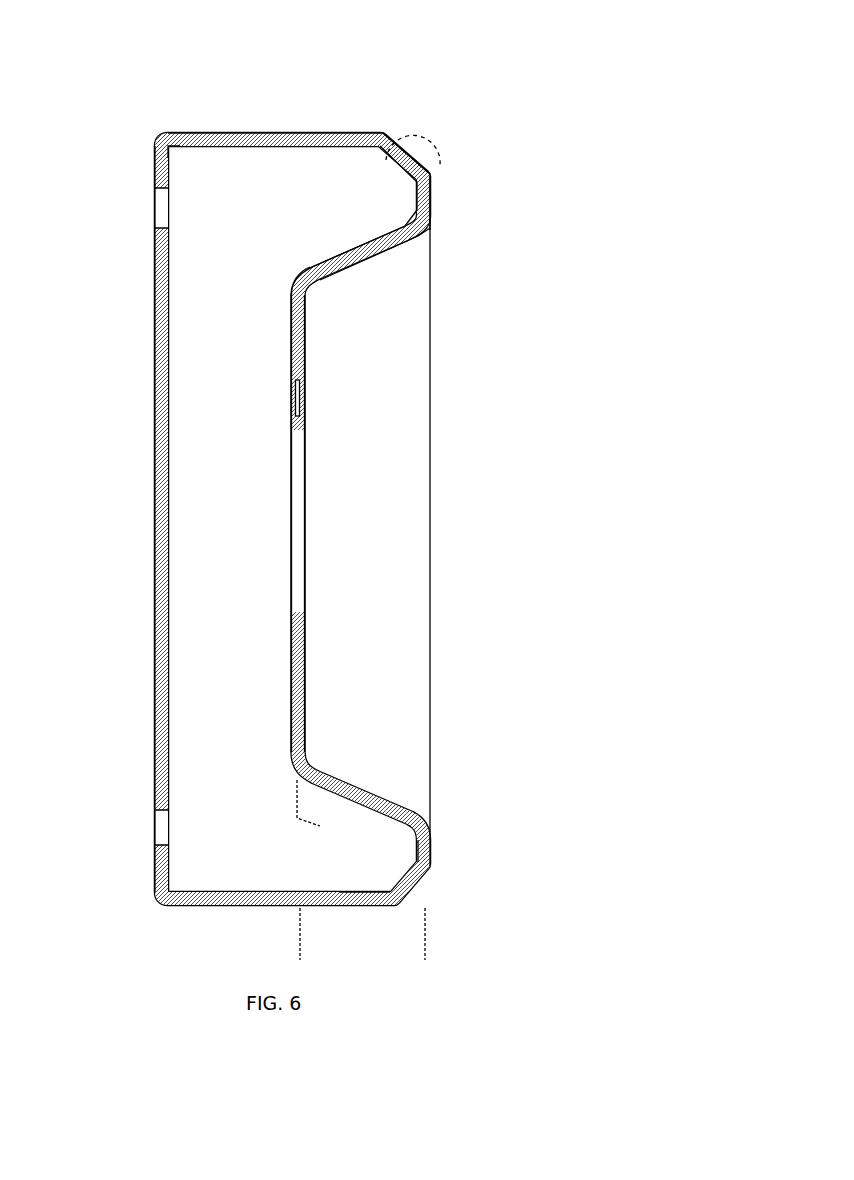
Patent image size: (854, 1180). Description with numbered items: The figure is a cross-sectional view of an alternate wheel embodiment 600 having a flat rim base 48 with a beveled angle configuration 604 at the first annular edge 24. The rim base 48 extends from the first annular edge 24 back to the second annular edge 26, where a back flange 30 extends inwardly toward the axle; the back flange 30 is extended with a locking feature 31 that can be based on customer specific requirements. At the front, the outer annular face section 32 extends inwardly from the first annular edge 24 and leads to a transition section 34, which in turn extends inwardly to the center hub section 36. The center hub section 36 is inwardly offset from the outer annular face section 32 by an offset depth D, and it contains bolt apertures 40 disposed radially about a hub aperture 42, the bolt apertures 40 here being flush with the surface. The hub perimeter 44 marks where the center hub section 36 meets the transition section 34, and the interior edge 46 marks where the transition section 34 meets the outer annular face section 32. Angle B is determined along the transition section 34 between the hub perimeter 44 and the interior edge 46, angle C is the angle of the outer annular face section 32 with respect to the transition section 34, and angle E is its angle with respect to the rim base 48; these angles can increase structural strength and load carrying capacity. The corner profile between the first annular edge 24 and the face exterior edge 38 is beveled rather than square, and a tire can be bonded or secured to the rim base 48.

The wheel embodiment 600 is at (575, 97).
The beveled angle configuration 604 is at (450, 128).
The first annular edge 24 is at (387, 133).
The second annular edge 26 is at (170, 150).
The back flange 30 is at (152, 168).
The locking feature 31 is at (152, 210).
The outer annular face section 32 is at (432, 205).
The transition section 34 is at (390, 245).
The center hub section 36 is at (305, 330).
The face exterior edge 38 is at (433, 172).
The bolt aperture 40 is at (305, 397).
The hub aperture 42 is at (305, 510).
The hub perimeter 44 is at (296, 272).
The interior edge 46 is at (418, 210).
The rim base 48 is at (287, 133).
The angle B is at (344, 795).
The angle C is at (416, 843).
The angle E is at (420, 868).
The offset depth D is at (413, 943).